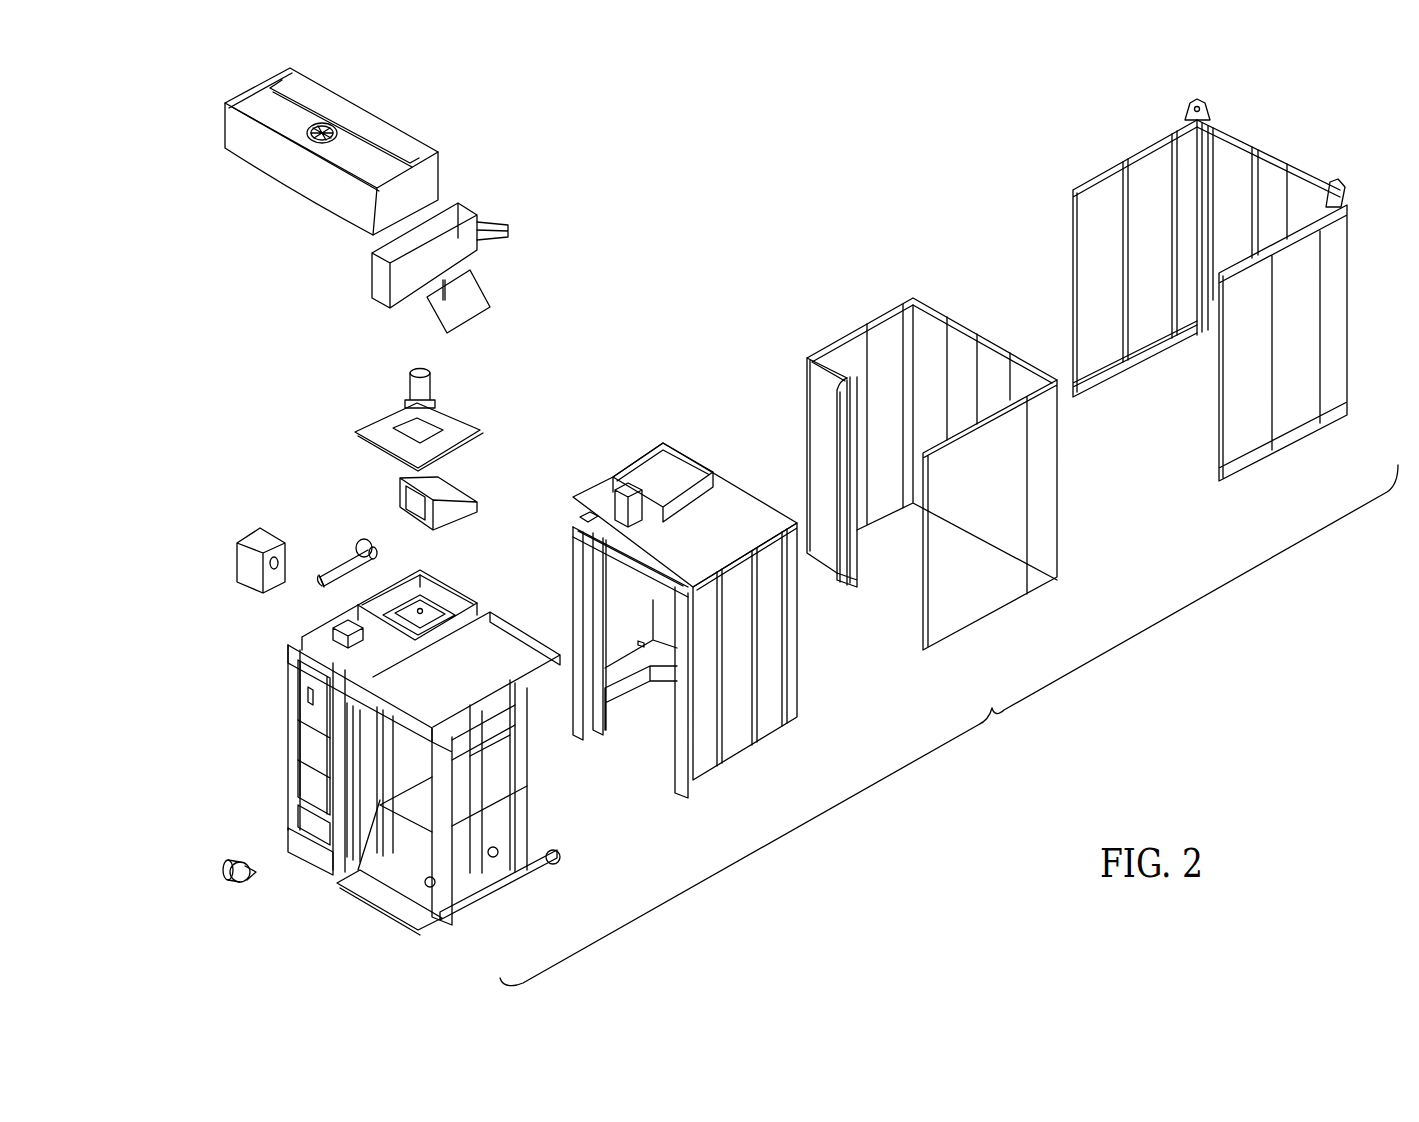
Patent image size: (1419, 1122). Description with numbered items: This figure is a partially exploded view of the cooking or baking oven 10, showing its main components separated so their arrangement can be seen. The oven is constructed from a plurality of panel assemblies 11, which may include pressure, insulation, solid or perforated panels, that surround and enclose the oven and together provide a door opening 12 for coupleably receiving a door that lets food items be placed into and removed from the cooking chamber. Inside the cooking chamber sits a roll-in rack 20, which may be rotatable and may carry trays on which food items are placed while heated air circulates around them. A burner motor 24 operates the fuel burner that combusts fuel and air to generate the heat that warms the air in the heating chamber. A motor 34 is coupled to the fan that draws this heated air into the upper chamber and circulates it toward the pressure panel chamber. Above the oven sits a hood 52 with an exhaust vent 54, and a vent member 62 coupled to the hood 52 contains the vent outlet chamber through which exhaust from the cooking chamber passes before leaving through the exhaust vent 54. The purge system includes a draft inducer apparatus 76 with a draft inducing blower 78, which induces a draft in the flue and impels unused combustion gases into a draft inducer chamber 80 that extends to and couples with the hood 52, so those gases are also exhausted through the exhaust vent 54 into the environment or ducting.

The cooking or baking oven 10 is at (949, 725).
The panel assemblies 11 is at (770, 770).
The door opening 12 is at (494, 872).
The roll-in rack 20 is at (417, 853).
The burner motor 24 is at (235, 858).
The motor 34 is at (423, 388).
The hood 52 is at (386, 121).
The exhaust vent 54 is at (310, 136).
The vent member 62 is at (395, 524).
The draft inducer apparatus 76 is at (204, 550).
The draft inducing blower 78 is at (363, 542).
The draft inducer chamber 80 is at (323, 570).